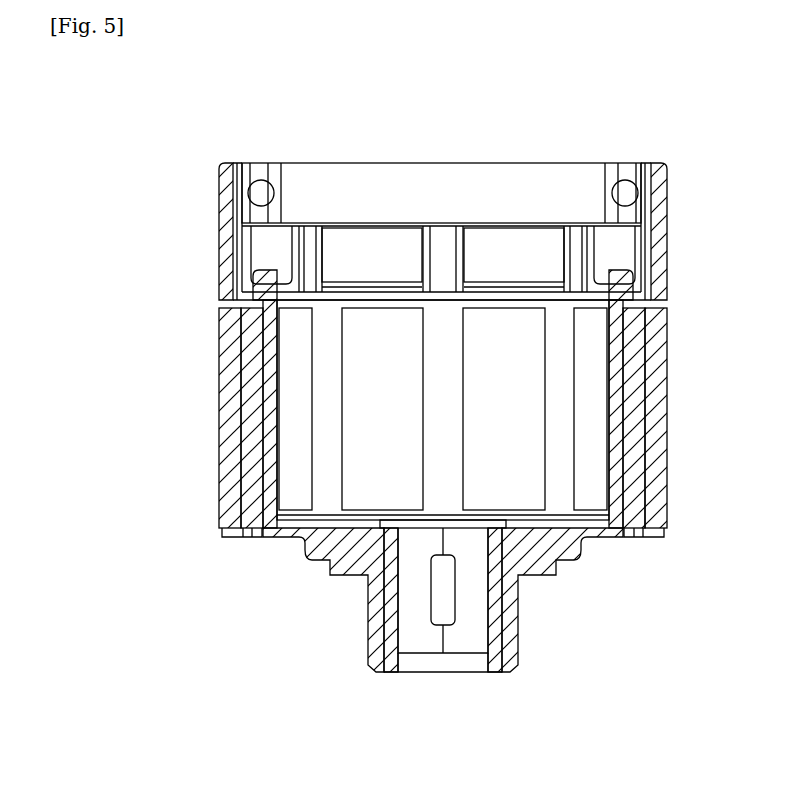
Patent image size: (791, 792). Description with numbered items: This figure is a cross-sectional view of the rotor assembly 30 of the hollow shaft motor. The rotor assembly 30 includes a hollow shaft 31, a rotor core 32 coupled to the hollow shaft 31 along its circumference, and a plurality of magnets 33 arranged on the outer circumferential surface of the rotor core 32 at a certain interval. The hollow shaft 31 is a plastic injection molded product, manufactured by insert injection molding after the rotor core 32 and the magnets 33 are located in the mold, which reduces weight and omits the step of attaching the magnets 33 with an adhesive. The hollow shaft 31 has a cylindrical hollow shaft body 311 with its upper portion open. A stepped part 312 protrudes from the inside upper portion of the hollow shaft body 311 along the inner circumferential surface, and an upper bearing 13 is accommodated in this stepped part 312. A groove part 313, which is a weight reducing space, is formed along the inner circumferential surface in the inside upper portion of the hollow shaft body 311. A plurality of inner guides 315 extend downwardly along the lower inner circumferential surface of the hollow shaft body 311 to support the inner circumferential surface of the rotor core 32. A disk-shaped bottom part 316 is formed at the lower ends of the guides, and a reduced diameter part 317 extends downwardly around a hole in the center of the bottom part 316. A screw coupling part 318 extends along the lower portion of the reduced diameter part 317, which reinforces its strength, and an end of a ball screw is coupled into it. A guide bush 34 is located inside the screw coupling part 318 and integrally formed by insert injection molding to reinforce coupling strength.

The rotor assembly 30 is at (182, 113).
The upper bearing 13 is at (260, 180).
The hollow shaft 31 is at (228, 262).
The hollow shaft body 311 is at (441, 227).
The stepped part 312 is at (368, 225).
The groove part 313 is at (443, 235).
The rotor core 32 is at (252, 387).
The magnet 33 is at (232, 427).
The inner guide 315 is at (327, 465).
The bottom part 316 is at (268, 530).
The reduced diameter part 317 is at (345, 553).
The screw coupling part 318 is at (382, 642).
The guide bush 34 is at (460, 640).